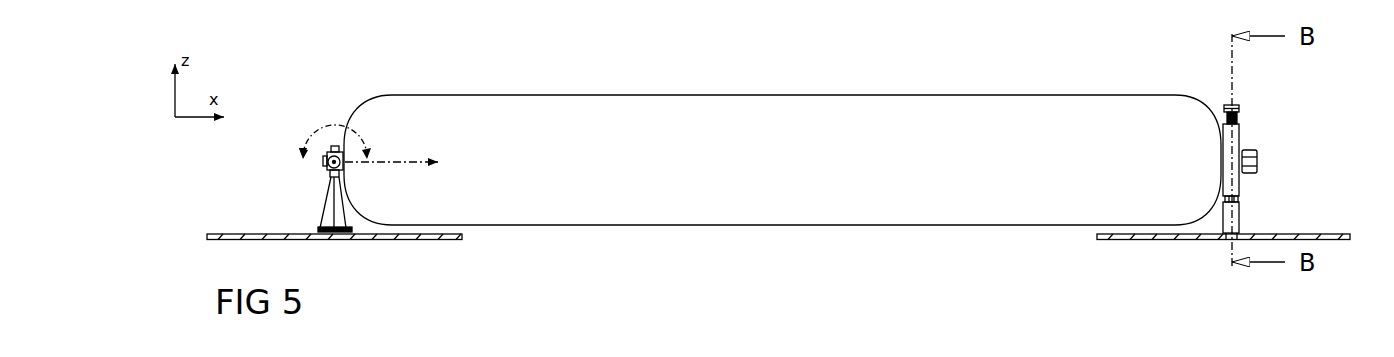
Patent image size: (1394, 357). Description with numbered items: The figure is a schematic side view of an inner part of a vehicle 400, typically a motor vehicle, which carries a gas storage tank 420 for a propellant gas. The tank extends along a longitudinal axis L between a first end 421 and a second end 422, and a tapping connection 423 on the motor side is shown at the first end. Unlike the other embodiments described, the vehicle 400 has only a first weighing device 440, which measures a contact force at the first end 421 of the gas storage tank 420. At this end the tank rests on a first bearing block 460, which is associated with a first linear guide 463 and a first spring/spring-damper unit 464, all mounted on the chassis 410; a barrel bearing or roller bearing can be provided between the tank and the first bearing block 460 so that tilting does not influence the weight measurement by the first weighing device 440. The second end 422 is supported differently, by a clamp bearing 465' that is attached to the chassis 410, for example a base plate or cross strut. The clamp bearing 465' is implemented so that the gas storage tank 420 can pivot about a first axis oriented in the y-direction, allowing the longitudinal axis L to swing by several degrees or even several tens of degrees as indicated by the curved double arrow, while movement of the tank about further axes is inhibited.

The vehicle 400 is at (770, 49).
The chassis 410 is at (390, 240).
The gas storage tank 420 is at (767, 166).
The first end of the gas storage tank 421 is at (1215, 98).
The second end of the gas storage tank 422 is at (364, 92).
The tapping connection of the gas storage tank 423 is at (1264, 157).
The first weighing device 440 is at (1234, 215).
The first bearing block 460 is at (1233, 135).
The first linear guide 463 is at (1227, 243).
The first spring/spring-damper unit 464 is at (1242, 118).
The clamp bearing 465' is at (349, 178).